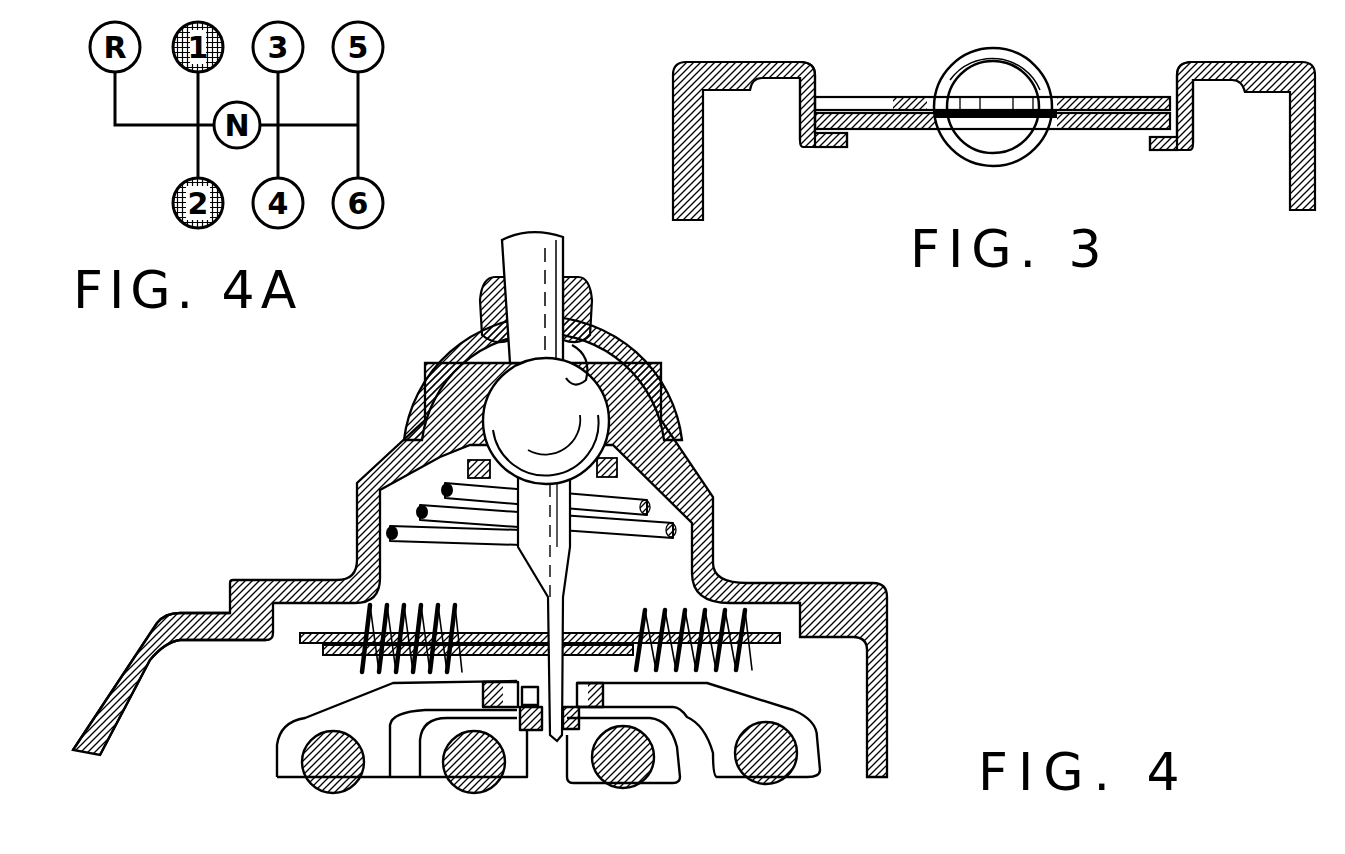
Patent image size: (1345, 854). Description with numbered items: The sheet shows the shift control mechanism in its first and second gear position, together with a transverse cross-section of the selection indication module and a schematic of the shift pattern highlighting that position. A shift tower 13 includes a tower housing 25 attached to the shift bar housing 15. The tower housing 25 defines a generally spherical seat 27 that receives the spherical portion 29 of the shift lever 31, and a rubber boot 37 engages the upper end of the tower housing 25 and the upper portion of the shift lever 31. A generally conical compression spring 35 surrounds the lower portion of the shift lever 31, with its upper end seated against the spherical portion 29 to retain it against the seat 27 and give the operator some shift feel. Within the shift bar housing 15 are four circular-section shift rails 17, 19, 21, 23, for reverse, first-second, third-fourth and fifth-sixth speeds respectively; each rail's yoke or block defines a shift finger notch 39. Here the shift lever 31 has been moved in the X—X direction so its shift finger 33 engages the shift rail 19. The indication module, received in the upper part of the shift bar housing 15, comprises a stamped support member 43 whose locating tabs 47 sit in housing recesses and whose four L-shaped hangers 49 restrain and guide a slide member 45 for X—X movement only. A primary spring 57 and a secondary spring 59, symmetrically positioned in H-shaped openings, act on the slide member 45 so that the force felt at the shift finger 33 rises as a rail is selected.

In FIG. 4, the shift tower 13 is at (682, 362).
In FIG. 3, the shift bar housing 15 is at (690, 140).
In FIG. 4, the shift bar housing 15 is at (110, 695).
In FIG. 4, the shift rail 17 is at (770, 758).
In FIG. 4, the shift rail 19 is at (622, 760).
In FIG. 4, the shift rail 21 is at (472, 765).
In FIG. 4, the shift rail 23 is at (330, 765).
In FIG. 4, the tower housing 25 is at (680, 470).
In FIG. 4, the spherical seat 27 is at (578, 378).
In FIG. 4, the spherical portion 29 is at (546, 421).
In FIG. 4, the shift lever 31 is at (520, 255).
In FIG. 4, the shift finger 33 is at (560, 630).
In FIG. 4, the compression spring 35 is at (410, 540).
In FIG. 4, the rubber boot 37 is at (425, 360).
In FIG. 4, the shift finger notch 39 is at (483, 690).
In FIG. 3, the support member 43 is at (898, 97).
In FIG. 4, the support member 43 is at (782, 645).
In FIG. 3, the slide member 45 is at (1080, 130).
In FIG. 4, the slide member 45 is at (328, 656).
In FIG. 3, the locating tabs 47 is at (762, 62).
In FIG. 3, the hangers 49 is at (832, 148).
In FIG. 3, the primary spring 57 is at (1030, 60).
In FIG. 4, the primary spring 57 is at (465, 612).
In FIG. 4, the secondary spring 59 is at (680, 607).